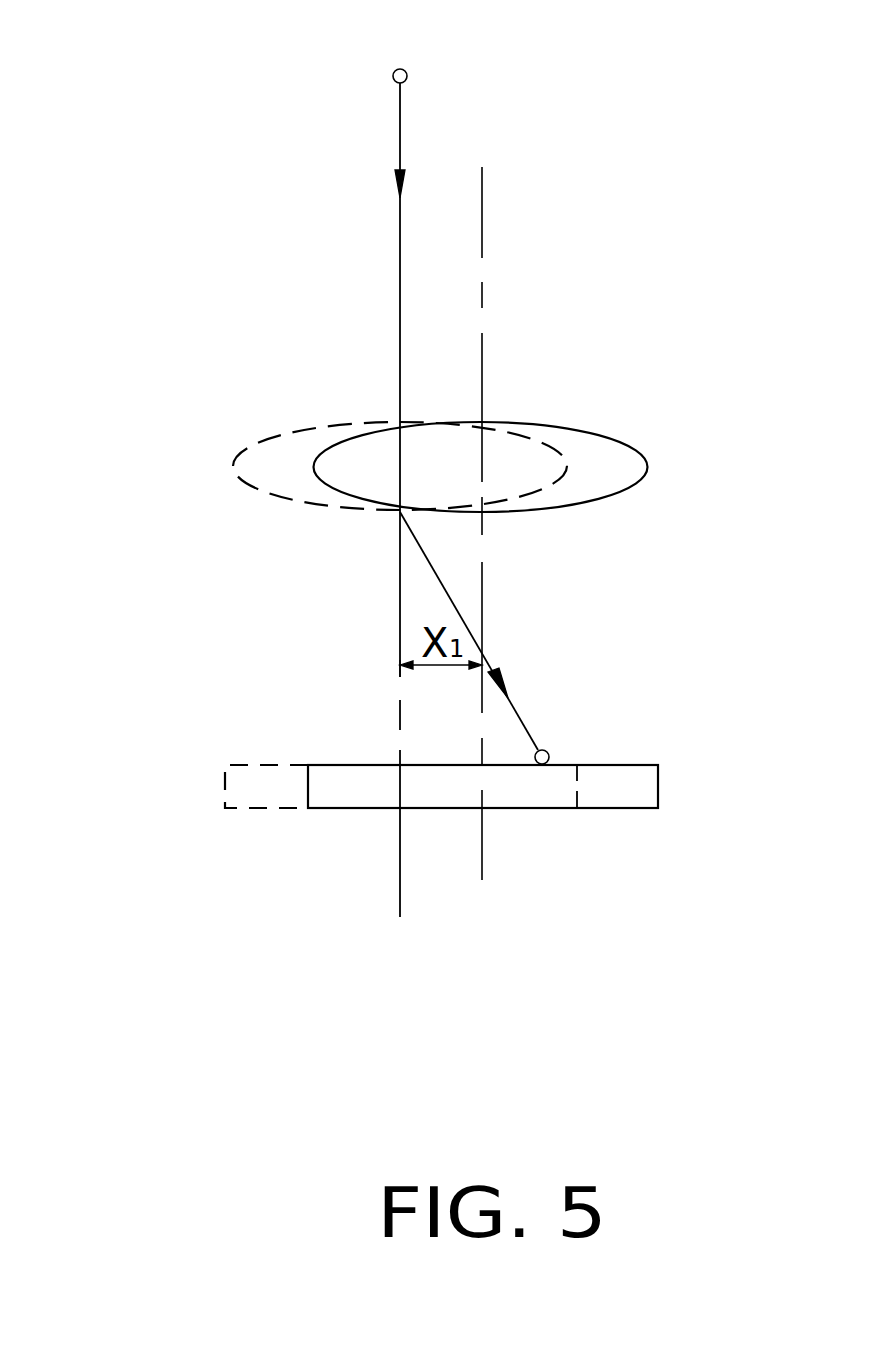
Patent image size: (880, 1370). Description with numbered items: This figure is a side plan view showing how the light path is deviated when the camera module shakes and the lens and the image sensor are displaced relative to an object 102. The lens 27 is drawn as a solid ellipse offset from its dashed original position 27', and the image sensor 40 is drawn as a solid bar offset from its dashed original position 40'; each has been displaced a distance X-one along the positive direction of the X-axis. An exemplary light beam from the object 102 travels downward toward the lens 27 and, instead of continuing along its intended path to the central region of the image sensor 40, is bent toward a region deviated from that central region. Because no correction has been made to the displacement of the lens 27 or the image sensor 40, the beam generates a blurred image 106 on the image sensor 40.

The object 102 is at (402, 69).
The lens 27 is at (502, 438).
The original position of the lens 27' is at (314, 442).
The blurred image 106 is at (548, 751).
The image sensor 40 is at (488, 834).
The original position of the image sensor 40' is at (180, 743).